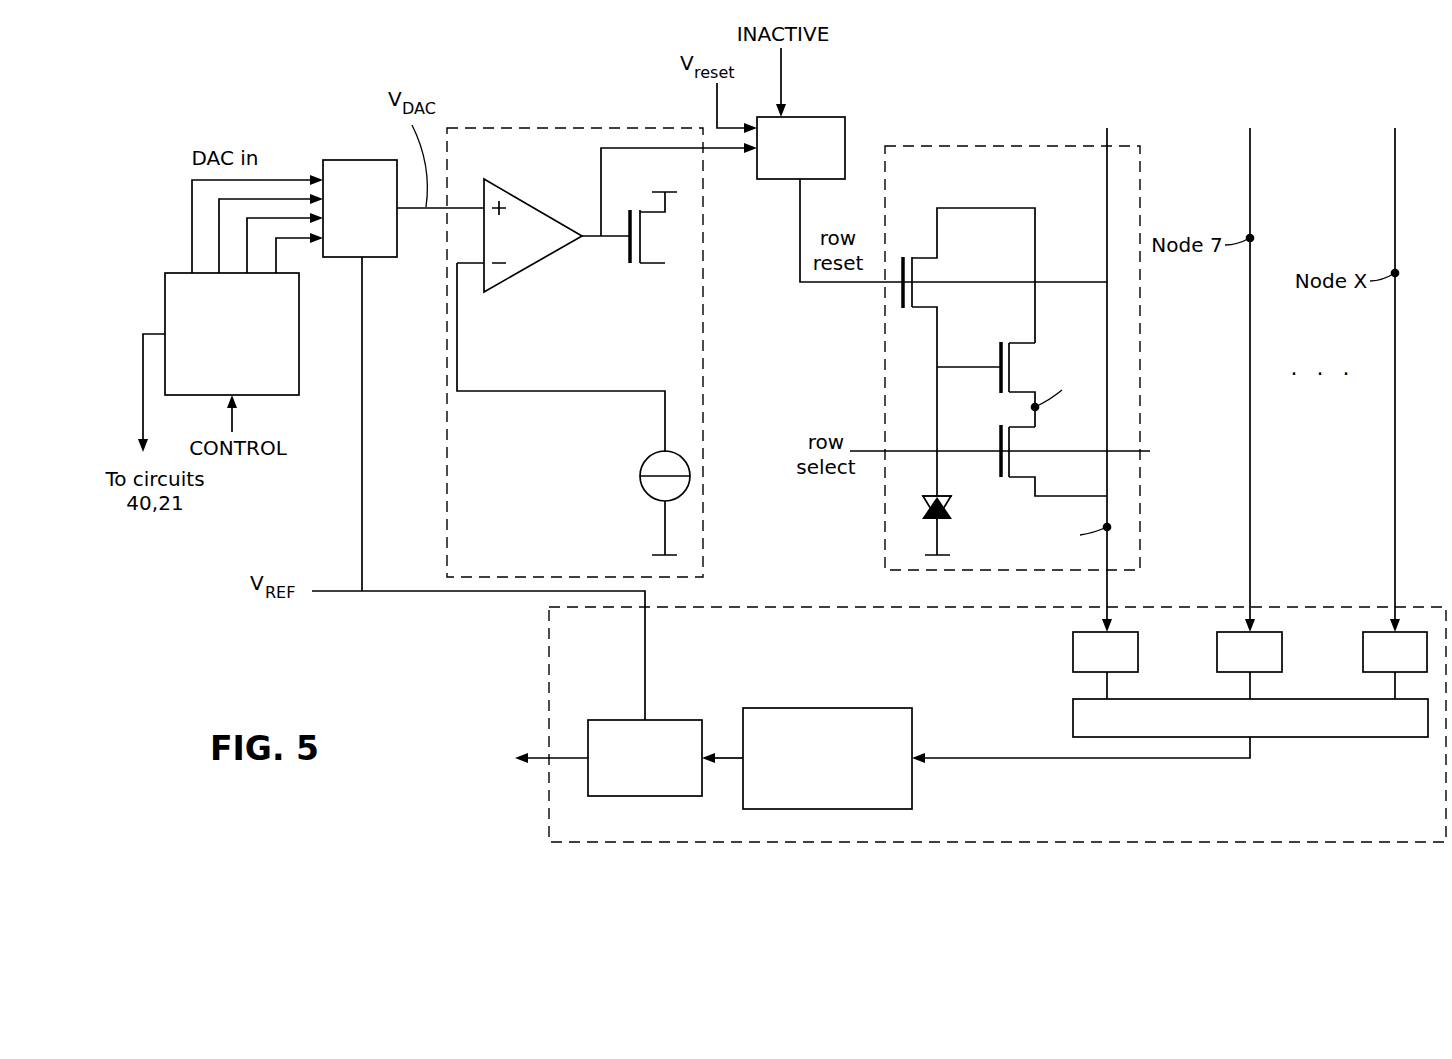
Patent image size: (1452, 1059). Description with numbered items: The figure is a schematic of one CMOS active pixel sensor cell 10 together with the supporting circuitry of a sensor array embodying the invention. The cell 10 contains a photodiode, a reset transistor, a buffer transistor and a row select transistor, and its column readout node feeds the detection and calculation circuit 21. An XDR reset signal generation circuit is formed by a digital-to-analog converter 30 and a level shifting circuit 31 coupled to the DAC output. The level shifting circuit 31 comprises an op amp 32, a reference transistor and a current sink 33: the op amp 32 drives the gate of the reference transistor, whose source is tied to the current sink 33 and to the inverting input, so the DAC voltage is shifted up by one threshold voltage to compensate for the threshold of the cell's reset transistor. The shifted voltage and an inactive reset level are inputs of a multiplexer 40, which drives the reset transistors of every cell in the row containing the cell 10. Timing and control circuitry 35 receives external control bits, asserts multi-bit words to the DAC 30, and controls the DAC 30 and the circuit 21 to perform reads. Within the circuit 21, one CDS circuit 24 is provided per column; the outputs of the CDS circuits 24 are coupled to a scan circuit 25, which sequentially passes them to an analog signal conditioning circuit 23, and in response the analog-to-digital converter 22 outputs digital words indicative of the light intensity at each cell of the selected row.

The active pixel sensor cell 10 is at (937, 146).
The detection and calculation circuit 21 is at (760, 607).
The analog-to-digital converter 22 is at (604, 718).
The analog signal conditioning circuit 23 is at (788, 706).
The CDS circuit 24 is at (1073, 641).
The scan circuit 25 is at (1366, 737).
The digital-to-analog converter 30 is at (345, 160).
The level shifting circuit 31 is at (547, 128).
The op amp 32 is at (507, 188).
The current sink 33 is at (639, 482).
The timing and control circuitry 35 is at (299, 351).
The multiplexer 40 is at (815, 115).